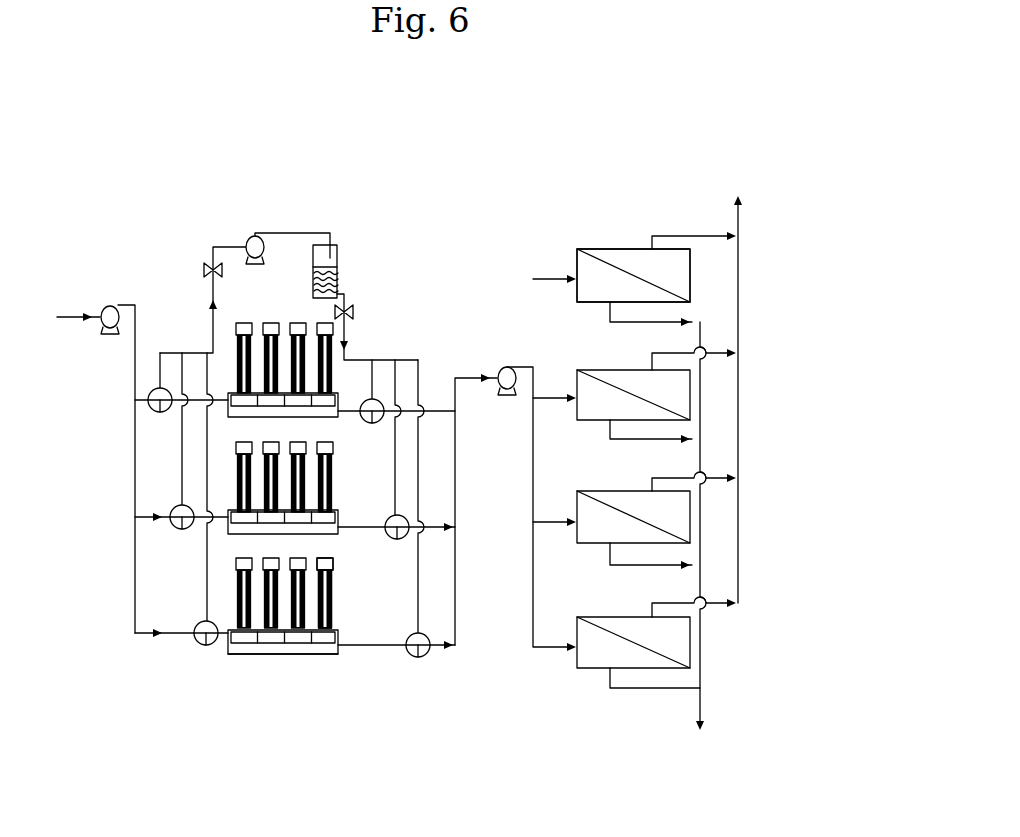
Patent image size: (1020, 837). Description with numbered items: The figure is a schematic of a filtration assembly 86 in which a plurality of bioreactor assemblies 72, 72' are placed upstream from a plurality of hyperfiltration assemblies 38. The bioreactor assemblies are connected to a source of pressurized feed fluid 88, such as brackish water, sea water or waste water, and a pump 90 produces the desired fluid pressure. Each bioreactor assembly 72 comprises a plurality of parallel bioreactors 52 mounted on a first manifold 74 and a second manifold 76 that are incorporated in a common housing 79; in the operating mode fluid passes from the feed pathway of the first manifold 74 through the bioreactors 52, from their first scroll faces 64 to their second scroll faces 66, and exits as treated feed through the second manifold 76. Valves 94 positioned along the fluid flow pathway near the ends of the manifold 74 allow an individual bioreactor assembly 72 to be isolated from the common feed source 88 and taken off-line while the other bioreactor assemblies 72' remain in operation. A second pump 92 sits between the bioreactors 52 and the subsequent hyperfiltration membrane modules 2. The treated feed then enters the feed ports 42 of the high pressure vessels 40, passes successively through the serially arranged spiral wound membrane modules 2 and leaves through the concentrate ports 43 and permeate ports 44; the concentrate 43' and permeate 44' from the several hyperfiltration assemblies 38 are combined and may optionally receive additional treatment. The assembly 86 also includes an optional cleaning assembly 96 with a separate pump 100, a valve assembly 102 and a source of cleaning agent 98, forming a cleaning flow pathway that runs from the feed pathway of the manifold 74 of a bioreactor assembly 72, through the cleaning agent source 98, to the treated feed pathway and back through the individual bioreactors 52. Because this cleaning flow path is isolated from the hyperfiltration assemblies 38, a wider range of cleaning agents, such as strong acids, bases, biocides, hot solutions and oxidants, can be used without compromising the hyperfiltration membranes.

The spiral wound membrane module 2 is at (585, 303).
The hyperfiltration assembly 38 is at (593, 728).
The high pressure vessel 40 is at (593, 249).
The feed port 42 is at (576, 272).
The concentrate port 43 is at (632, 328).
The concentrate 43' is at (726, 526).
The permeate port 44 is at (652, 216).
The permeate 44' is at (764, 399).
The bioreactor 52 is at (333, 612).
The first scroll face 64 is at (333, 626).
The second scroll face 66 is at (334, 572).
The bioreactor assembly 72 is at (300, 432).
The bioreactor assembly 72' is at (311, 521).
The first manifold 74 is at (215, 641).
The second manifold 76 is at (341, 650).
The common housing 79 is at (300, 655).
The filtration assembly 86 is at (395, 172).
The source of pressurized feed fluid 88 is at (124, 305).
The pump 90 is at (101, 306).
The pump 92 is at (504, 367).
The valve 94 is at (157, 412).
The cleaning assembly 96 is at (291, 204).
The source of cleaning agent 98 is at (338, 272).
The pump 100 is at (250, 237).
The valve assembly 102 is at (203, 268).